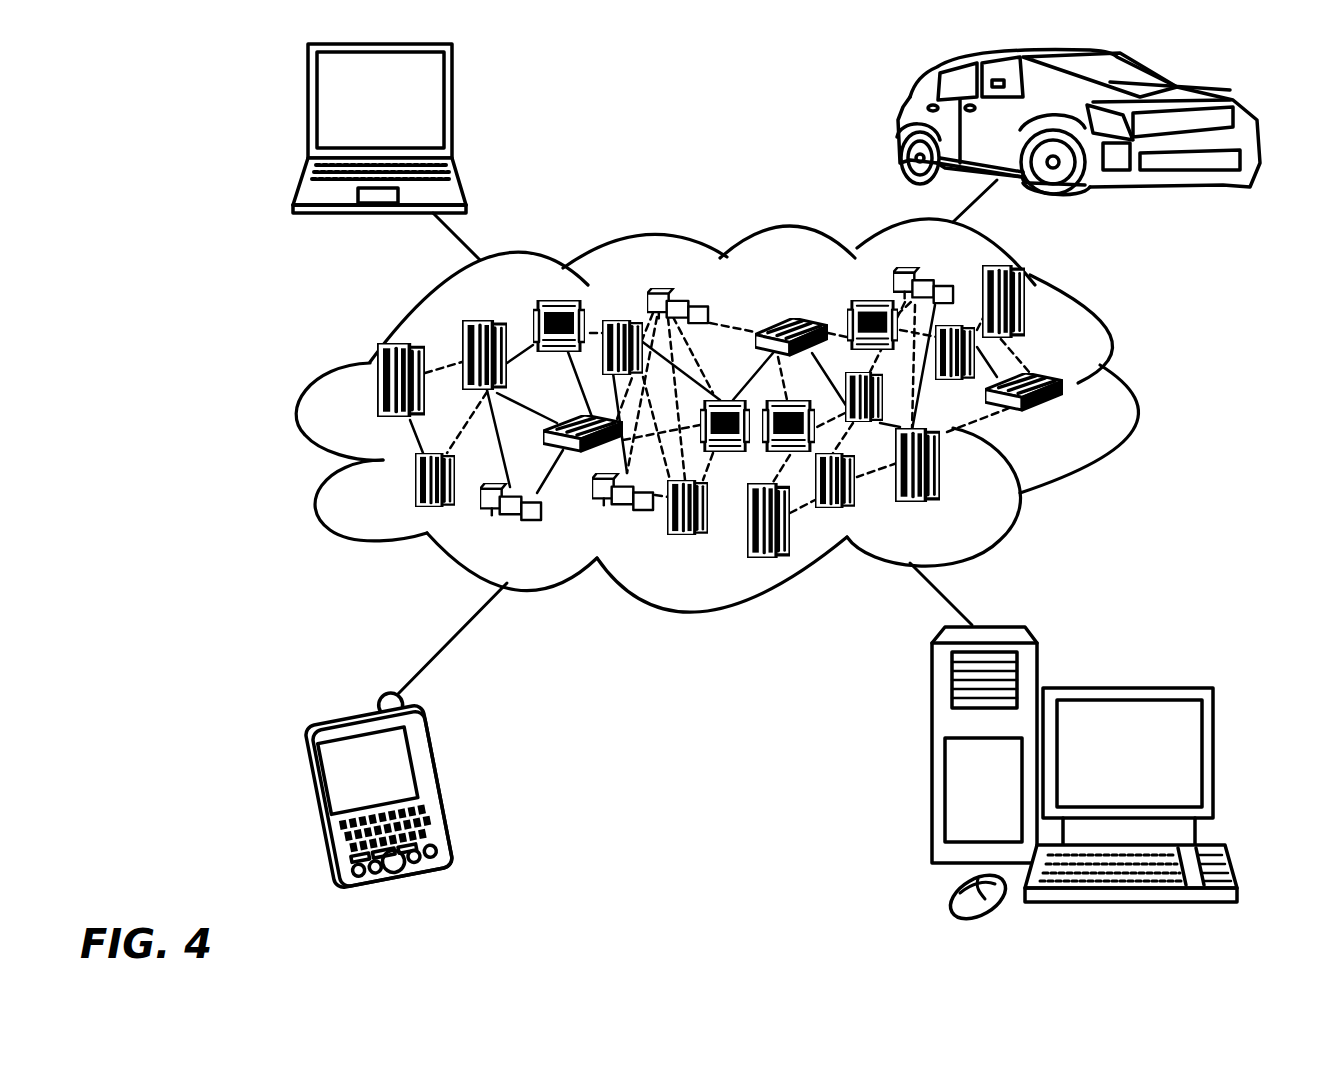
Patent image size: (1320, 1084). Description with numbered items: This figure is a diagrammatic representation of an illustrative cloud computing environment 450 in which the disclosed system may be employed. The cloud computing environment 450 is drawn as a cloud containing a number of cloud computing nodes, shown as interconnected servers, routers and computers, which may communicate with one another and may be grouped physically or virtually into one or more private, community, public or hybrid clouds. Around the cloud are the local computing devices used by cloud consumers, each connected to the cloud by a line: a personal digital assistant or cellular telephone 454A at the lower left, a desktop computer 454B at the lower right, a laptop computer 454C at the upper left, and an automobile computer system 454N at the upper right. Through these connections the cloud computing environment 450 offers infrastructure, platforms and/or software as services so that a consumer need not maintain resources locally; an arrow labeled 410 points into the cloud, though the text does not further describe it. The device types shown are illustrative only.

The network environment 410 is at (755, 415).
The cloud computing environment 450 is at (1130, 387).
The personal digital assistant (PDA) or cellular telephone 454A is at (440, 786).
The desktop computer 454B is at (1128, 688).
The laptop computer 454C is at (452, 110).
The automobile computer system 454N is at (898, 125).